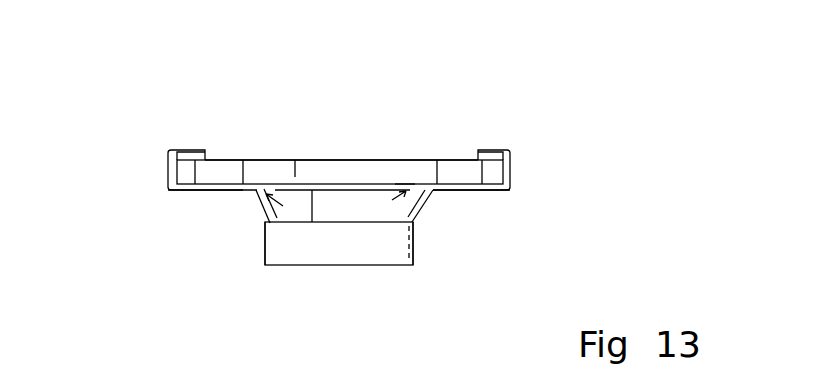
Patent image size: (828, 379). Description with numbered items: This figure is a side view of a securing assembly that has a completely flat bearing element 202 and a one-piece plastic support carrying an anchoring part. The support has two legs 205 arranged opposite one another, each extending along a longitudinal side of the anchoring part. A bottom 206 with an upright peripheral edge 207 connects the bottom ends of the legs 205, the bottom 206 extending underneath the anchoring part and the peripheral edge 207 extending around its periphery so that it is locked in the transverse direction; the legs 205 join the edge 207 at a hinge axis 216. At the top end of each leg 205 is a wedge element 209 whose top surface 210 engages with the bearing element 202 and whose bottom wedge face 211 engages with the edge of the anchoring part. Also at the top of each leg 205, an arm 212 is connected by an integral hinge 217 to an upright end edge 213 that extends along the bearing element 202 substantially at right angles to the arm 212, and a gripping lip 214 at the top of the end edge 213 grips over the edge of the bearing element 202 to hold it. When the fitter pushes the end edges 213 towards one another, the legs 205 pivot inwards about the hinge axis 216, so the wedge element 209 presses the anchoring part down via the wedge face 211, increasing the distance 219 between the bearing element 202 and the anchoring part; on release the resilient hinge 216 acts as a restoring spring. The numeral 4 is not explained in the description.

The mounting surface 4 is at (430, 205).
The bearing element 202 is at (348, 167).
The legs 205 is at (258, 224).
The bottom 206 is at (332, 265).
The peripheral edge 207 is at (403, 252).
The wedge element 209 is at (418, 173).
The top surface 210 is at (417, 181).
The bottom wedge face 211 is at (295, 177).
The arm 212 is at (182, 192).
The upright end edge 213 is at (170, 177).
The gripping lip 214 is at (180, 152).
The hinge axis 216 is at (264, 226).
The integral hinge 217 is at (242, 184).
The distance 219 is at (332, 182).